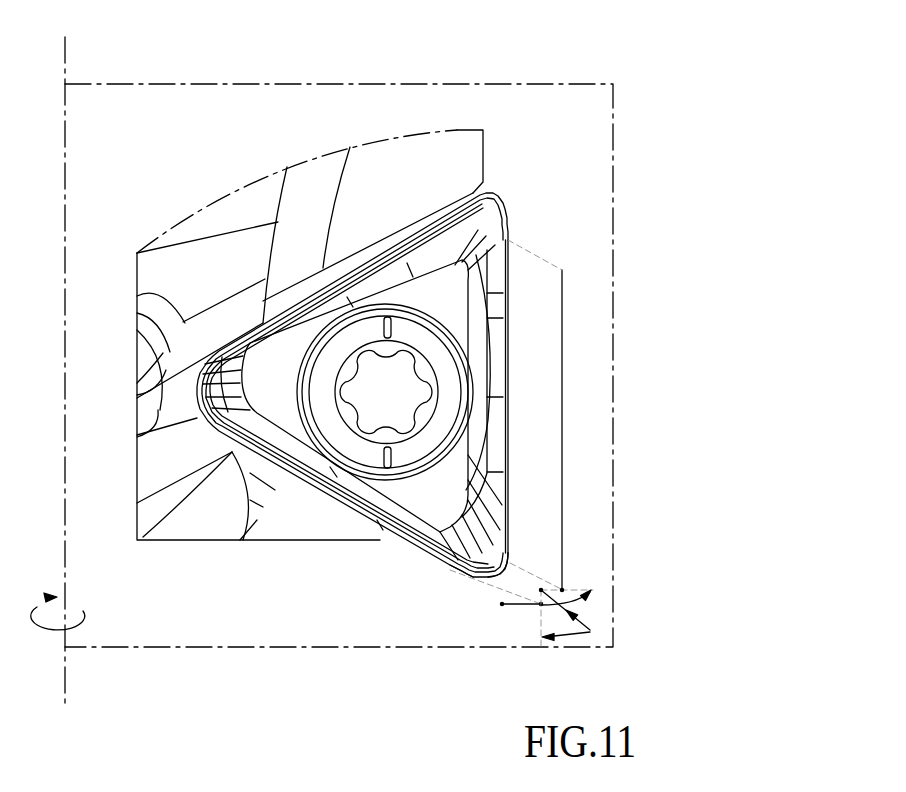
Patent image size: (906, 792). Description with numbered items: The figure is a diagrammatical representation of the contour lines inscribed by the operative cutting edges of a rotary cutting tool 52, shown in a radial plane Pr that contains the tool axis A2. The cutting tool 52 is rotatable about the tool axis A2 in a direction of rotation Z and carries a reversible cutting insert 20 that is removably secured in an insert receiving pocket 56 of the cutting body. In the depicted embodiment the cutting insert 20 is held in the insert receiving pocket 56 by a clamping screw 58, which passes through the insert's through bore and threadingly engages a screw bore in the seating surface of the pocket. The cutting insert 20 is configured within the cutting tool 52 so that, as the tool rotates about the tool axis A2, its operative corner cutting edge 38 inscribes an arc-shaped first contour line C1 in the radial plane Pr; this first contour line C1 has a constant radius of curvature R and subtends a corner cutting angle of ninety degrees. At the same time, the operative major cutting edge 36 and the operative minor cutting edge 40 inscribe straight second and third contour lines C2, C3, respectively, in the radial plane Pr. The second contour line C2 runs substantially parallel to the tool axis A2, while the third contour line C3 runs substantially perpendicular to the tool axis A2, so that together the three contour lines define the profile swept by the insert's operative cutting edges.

The cutting tool 52 is at (283, 142).
The insert receiving pocket 56 is at (421, 212).
The cutting insert 20 is at (418, 495).
The major cutting edge 36 is at (508, 431).
The clamping screw 58 is at (374, 405).
The corner cutting edge 38 is at (514, 584).
The minor cutting edge 40 is at (477, 560).
The radial plane Pr is at (613, 143).
The tool axis A2 is at (69, 355).
The direction of rotation Z is at (64, 606).
The first contour line C1 is at (557, 598).
The second contour line C2 is at (562, 467).
The third contour line C3 is at (520, 605).
The radius of curvature R is at (580, 620).